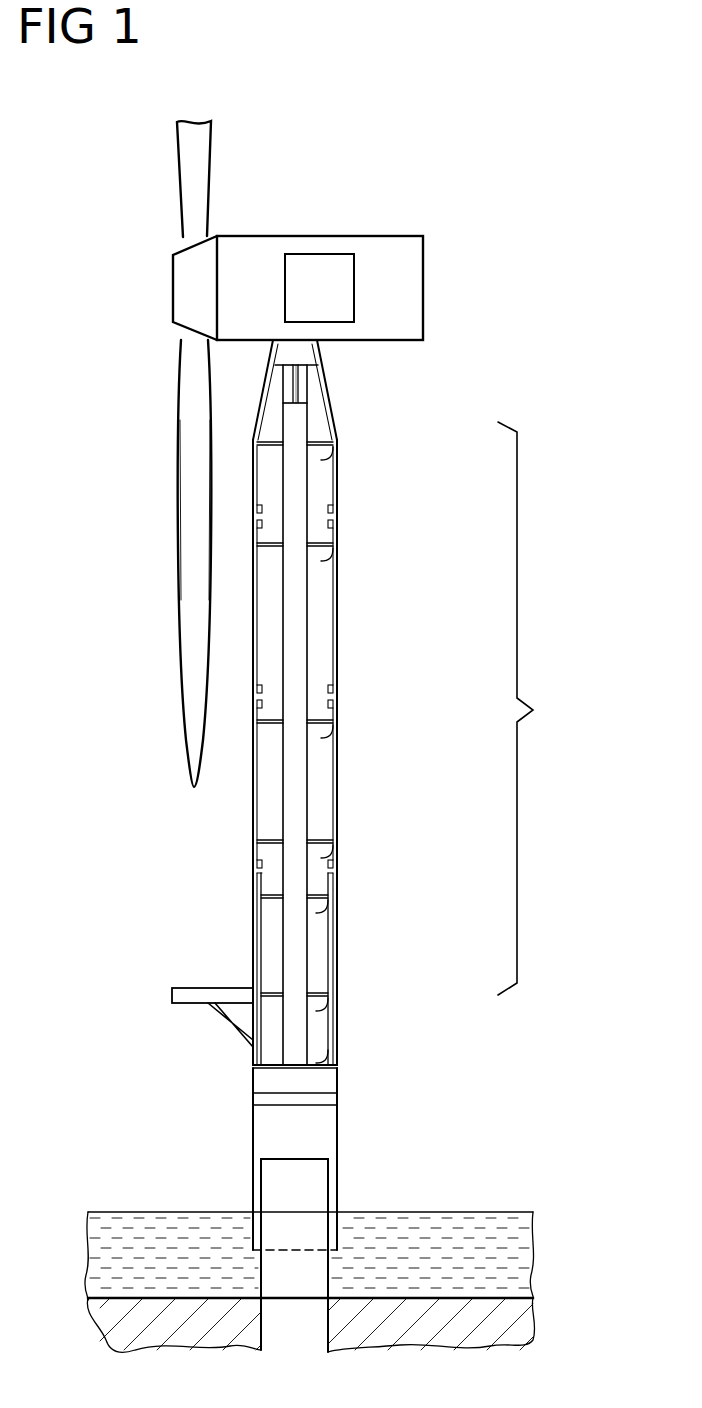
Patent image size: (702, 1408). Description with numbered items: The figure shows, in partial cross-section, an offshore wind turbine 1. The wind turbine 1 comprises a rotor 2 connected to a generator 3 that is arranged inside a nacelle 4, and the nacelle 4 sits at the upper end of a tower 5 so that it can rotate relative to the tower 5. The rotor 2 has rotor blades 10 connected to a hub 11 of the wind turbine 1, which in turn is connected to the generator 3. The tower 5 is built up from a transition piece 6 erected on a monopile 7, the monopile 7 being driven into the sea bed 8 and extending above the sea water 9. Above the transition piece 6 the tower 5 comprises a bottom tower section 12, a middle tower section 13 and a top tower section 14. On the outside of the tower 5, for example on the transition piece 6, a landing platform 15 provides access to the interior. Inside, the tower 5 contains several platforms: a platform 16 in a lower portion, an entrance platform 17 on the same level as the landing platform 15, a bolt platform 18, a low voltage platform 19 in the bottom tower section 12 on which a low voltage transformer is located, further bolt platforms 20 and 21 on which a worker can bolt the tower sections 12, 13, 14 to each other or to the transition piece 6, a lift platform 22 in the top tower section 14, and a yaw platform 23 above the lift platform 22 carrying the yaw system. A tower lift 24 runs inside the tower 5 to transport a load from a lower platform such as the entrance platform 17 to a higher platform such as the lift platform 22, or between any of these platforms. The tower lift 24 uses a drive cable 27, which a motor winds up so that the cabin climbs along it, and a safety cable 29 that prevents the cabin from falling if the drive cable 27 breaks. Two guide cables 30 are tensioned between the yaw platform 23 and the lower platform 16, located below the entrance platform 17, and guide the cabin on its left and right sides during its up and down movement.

The wind turbine 1 is at (458, 138).
The rotor 2 is at (158, 252).
The generator 3 is at (326, 262).
The nacelle 4 is at (397, 236).
The tower 5 is at (529, 708).
The transition piece 6 is at (340, 948).
The monopile 7 is at (332, 1186).
The sea bed 8 is at (524, 1331).
The sea water 9 is at (525, 1266).
The rotor blades 10 is at (186, 531).
The hub 11 is at (186, 296).
The bottom tower section 12 is at (340, 780).
The middle tower section 13 is at (340, 627).
The top tower section 14 is at (340, 490).
The landing platform 15 is at (212, 988).
The platform 16 is at (330, 1052).
The entrance platform 17 is at (330, 975).
The bolt platform 18 is at (330, 918).
The low voltage platform 19 is at (333, 822).
The bolt platform 20 is at (333, 738).
The bolt platform 21 is at (333, 560).
The lift platform 22 is at (333, 465).
The yaw platform 23 is at (322, 380).
The tower lift 24 is at (283, 410).
The drive cable 27 is at (300, 395).
The safety cable 29 is at (288, 388).
The guide cables 30 is at (286, 1053).